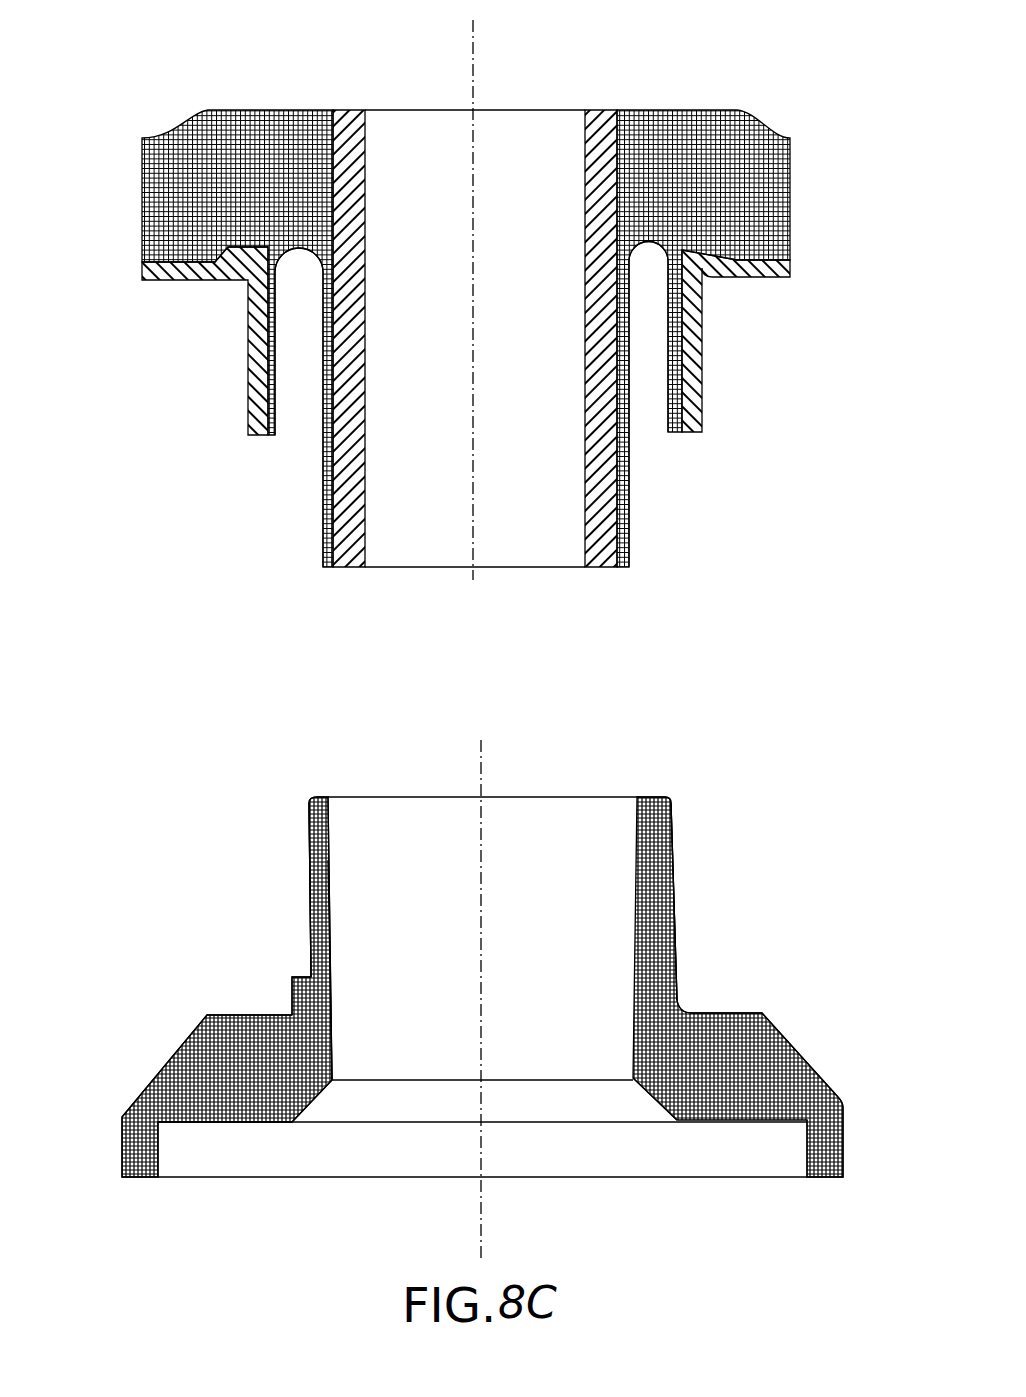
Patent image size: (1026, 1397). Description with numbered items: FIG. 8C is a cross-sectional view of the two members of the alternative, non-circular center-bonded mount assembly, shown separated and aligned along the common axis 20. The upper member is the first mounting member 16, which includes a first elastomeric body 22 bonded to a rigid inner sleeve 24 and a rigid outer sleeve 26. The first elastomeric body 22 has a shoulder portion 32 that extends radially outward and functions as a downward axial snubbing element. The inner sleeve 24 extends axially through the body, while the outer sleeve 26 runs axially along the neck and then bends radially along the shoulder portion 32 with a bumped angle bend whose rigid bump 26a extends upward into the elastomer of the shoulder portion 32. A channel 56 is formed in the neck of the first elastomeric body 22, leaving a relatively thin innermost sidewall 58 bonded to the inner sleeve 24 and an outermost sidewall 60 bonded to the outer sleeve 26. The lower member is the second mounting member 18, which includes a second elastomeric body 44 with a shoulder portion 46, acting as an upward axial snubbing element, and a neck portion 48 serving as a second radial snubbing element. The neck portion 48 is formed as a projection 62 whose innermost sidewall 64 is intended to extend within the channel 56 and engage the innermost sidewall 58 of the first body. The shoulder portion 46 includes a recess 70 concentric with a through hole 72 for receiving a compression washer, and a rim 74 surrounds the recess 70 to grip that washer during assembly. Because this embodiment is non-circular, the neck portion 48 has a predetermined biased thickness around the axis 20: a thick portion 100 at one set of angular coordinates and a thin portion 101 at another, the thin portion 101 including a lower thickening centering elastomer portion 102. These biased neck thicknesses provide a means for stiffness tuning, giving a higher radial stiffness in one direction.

The first mounting member 16 is at (481, 333).
The second mounting member 18 is at (473, 1037).
The common axis 20 is at (473, 70).
The first elastomeric body 22 is at (793, 175).
The rigid inner sleeve 24 is at (365, 402).
The rigid outer sleeve 26 is at (247, 360).
The rigid bump 26a is at (712, 290).
The shoulder portion 32 is at (142, 200).
The second elastomeric body 44 is at (677, 998).
The shoulder portion 46 is at (170, 1052).
The neck portion 48 is at (672, 833).
The channel 56 is at (654, 450).
The innermost sidewall 58 is at (323, 510).
The outermost sidewall 60 is at (277, 362).
The projection 62 is at (328, 860).
The innermost sidewall 64 is at (332, 920).
The recess 70 is at (178, 1127).
The through hole 72 is at (437, 1036).
The rim 74 is at (828, 1180).
The thick portion 100 is at (720, 877).
The thin portion 101 is at (272, 878).
The lower thickening centering elastomer portion 102 is at (270, 968).